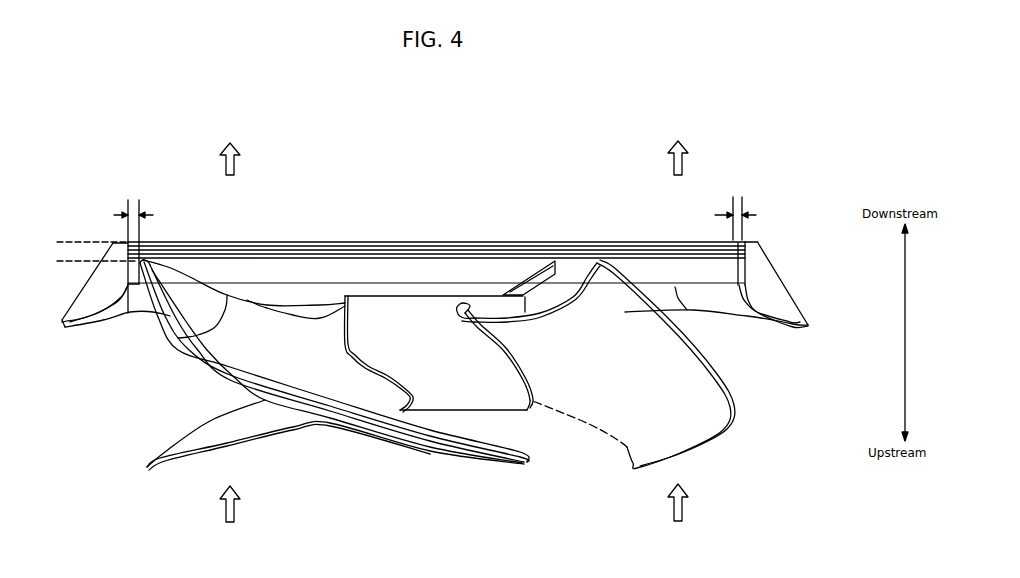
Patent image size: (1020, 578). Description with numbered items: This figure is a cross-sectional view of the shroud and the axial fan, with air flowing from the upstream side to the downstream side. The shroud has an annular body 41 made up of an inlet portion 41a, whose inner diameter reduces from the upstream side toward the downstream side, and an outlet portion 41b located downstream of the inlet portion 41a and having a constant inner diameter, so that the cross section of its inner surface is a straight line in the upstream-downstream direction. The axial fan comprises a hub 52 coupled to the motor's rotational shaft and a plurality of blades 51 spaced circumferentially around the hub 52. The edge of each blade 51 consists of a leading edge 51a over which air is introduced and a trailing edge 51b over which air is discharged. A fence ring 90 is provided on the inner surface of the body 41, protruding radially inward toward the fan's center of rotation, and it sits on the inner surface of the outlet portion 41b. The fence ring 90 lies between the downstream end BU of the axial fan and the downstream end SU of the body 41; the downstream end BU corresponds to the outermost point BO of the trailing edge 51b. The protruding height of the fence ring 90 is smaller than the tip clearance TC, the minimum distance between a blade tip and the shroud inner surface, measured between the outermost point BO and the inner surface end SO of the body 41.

The fence ring 90 is at (383, 253).
The body 41 is at (462, 272).
The inlet portion 41a is at (778, 315).
The outlet portion 41b is at (750, 263).
The blade 51 is at (355, 395).
The leading edge 51a is at (408, 400).
The trailing edge 51b is at (178, 338).
The hub 52 is at (463, 378).
The inner surface end of the body SO is at (127, 198).
The outermost point of the trailing edge BO is at (139, 200).
The tip clearance TC is at (144, 215).
The downstream end of the shroud body SU is at (79, 242).
The downstream end of the axial fan BU is at (84, 261).